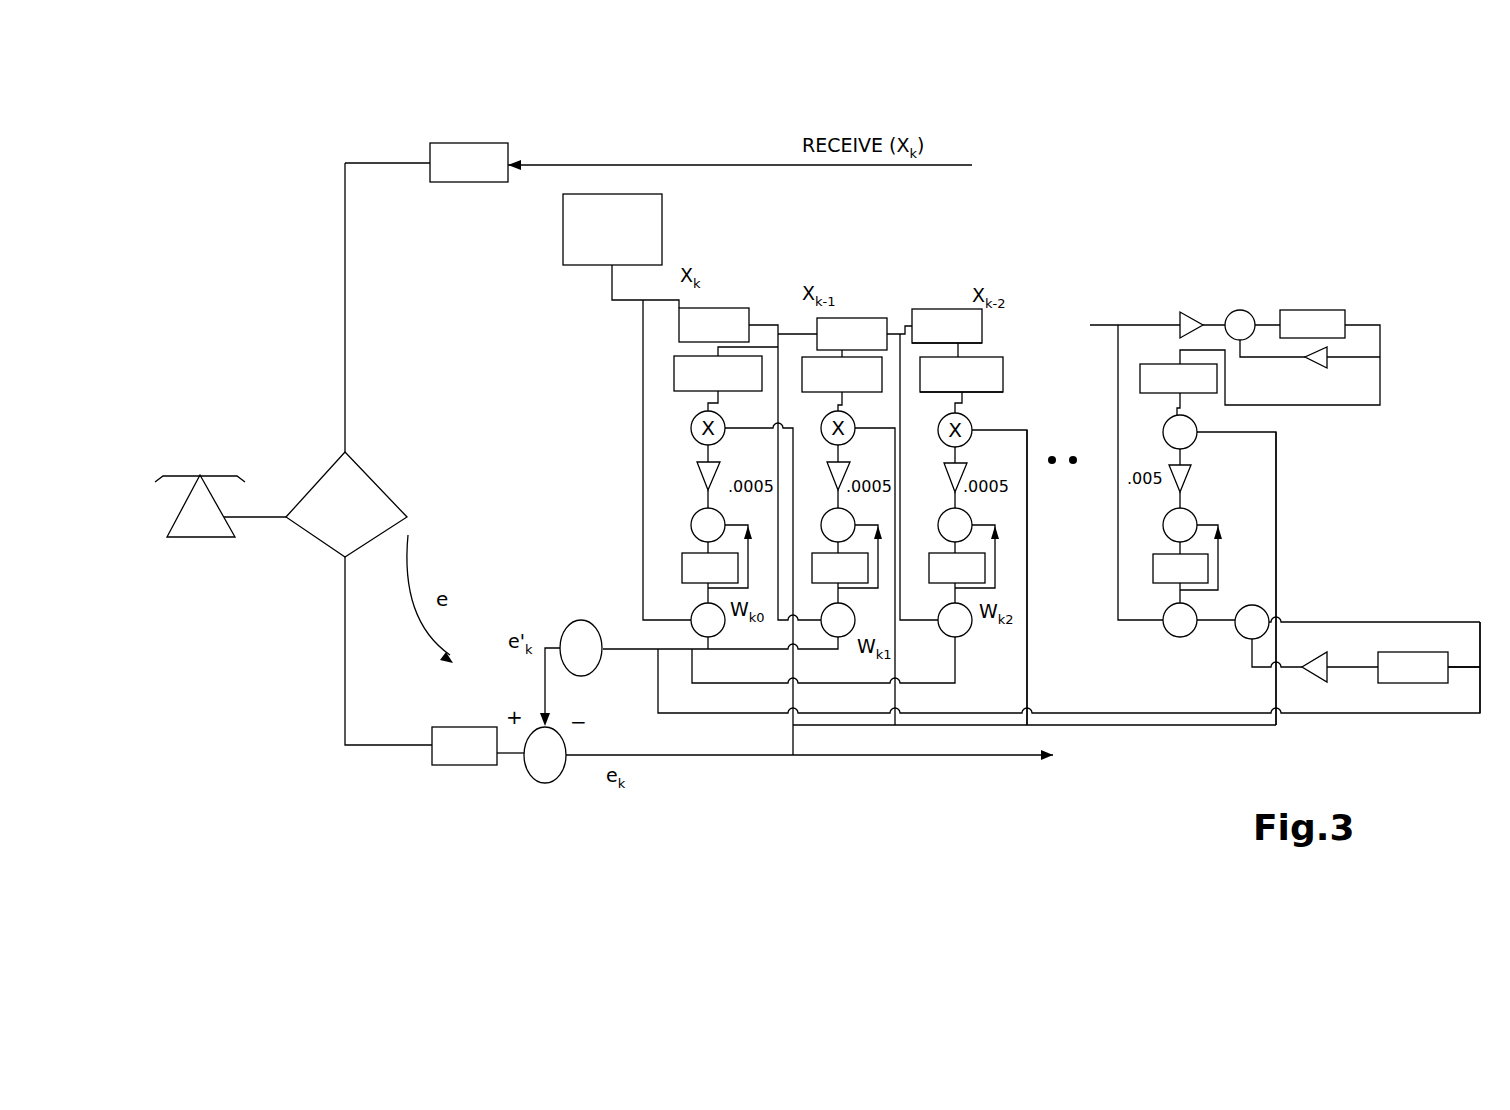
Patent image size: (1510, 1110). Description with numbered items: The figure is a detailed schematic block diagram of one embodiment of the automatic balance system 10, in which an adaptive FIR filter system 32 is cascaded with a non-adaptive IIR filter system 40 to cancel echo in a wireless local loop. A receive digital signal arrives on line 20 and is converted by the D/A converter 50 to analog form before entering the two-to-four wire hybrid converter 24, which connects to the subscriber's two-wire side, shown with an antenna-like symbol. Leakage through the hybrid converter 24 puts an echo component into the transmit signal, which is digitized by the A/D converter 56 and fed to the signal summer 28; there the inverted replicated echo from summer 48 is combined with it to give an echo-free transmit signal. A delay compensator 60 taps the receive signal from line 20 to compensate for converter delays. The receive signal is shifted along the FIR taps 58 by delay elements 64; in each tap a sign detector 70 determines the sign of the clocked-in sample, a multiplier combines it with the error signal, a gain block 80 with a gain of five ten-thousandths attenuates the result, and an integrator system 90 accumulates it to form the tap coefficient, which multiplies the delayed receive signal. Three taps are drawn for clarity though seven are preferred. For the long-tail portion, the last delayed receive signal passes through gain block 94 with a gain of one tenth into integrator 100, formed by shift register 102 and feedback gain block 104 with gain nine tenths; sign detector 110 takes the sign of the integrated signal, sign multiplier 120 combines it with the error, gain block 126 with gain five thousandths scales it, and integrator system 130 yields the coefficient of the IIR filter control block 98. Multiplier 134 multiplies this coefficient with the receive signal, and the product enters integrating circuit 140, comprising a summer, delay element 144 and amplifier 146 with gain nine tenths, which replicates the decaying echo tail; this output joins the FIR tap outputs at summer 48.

The automatic balance system 10 is at (1115, 776).
The line 20 is at (700, 163).
The 2 to 4 wire hybrid converter 24 is at (390, 464).
The signal summer 28 is at (546, 785).
The adaptive FIR filter system 32 is at (1040, 622).
The non-adaptive IIR filter system 40 is at (1342, 528).
The summer 48 is at (566, 625).
The digital to analog (D/A) converter 50 is at (467, 143).
The analog to digital (A/D) converter 56 is at (466, 767).
The FIR tap 58 is at (1028, 376).
The delay compensator 60 is at (662, 228).
The delay element 64 is at (710, 308).
The sign detector 70 is at (674, 370).
The gain block 80 is at (720, 466).
The integrator system 90 is at (622, 542).
The gain block 94 is at (1185, 312).
The IIR filter control block 98 is at (1325, 478).
The integrator 100 is at (1283, 319).
The shift register 102 is at (1312, 312).
The gain block 104 is at (1312, 364).
The sign detector 110 is at (1198, 393).
The sign multiplier 120 is at (1197, 440).
The gain block 126 is at (1192, 480).
The integrator system 130 is at (1303, 556).
The multiplier 134 is at (1162, 660).
The integrating circuit 140 is at (1405, 750).
The delay element 144 is at (1395, 683).
The amplifier 146 is at (1311, 676).